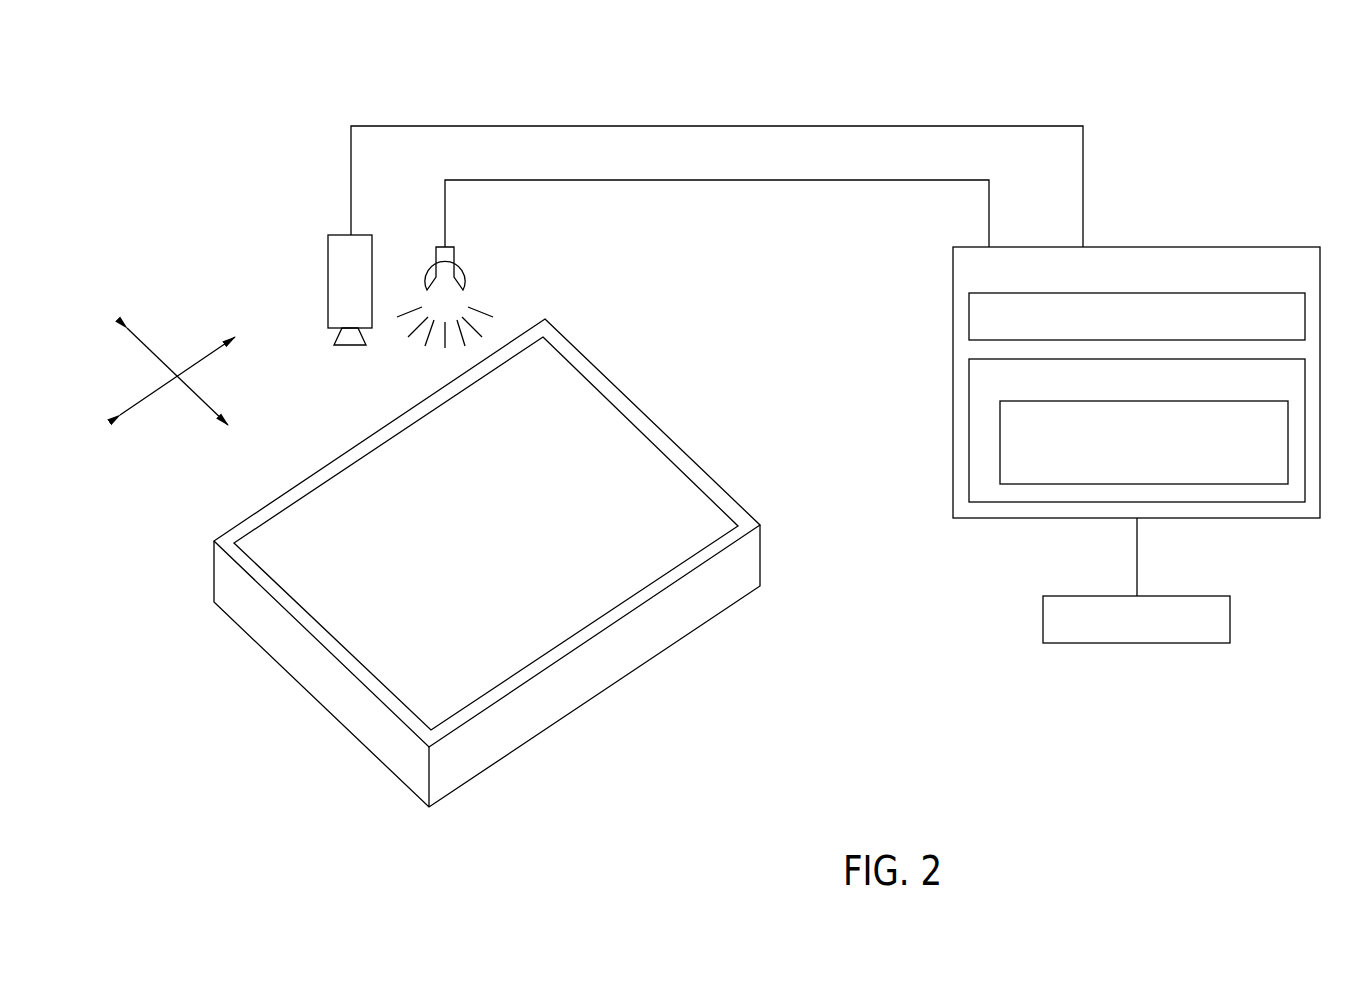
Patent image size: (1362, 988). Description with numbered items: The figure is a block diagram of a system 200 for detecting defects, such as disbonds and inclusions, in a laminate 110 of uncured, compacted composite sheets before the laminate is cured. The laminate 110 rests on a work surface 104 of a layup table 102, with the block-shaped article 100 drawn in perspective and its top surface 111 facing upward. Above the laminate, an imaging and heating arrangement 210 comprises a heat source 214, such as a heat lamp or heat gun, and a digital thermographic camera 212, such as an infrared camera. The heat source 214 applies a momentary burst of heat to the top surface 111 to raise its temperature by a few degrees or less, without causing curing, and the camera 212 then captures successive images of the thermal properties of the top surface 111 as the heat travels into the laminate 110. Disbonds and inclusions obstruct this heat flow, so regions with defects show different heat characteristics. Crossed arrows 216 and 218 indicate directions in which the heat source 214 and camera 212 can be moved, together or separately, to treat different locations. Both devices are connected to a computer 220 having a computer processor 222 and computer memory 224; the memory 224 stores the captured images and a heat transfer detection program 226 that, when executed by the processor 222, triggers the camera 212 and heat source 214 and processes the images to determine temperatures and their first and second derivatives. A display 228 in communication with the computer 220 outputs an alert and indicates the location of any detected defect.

The system 200 is at (1256, 138).
The thermal imaging assembly 210 is at (262, 147).
The digital thermographic camera 212 is at (340, 268).
The heat source 214 is at (446, 260).
The arrow 216 is at (152, 392).
The arrow 218 is at (198, 392).
The laminated article 100 is at (593, 349).
The layup table 102 is at (747, 565).
The work surface 104 is at (707, 485).
The laminate 110 is at (638, 423).
The top surface 111 is at (511, 543).
The computer 220 is at (1299, 285).
The computer processor 222 is at (1299, 332).
The computer memory 224 is at (1291, 397).
The heat transfer detection program 226 is at (1266, 444).
The display 228 is at (1218, 634).